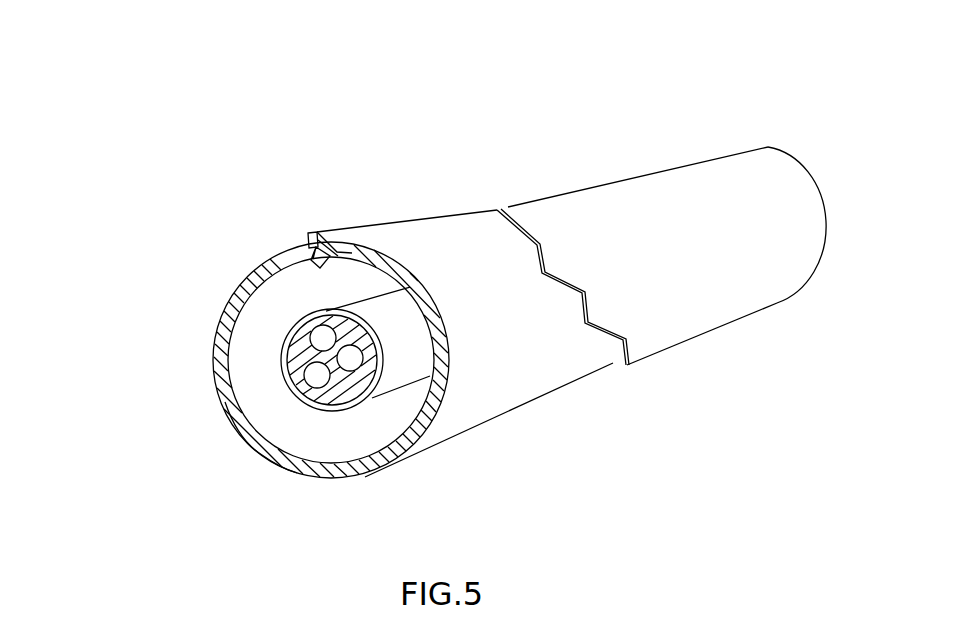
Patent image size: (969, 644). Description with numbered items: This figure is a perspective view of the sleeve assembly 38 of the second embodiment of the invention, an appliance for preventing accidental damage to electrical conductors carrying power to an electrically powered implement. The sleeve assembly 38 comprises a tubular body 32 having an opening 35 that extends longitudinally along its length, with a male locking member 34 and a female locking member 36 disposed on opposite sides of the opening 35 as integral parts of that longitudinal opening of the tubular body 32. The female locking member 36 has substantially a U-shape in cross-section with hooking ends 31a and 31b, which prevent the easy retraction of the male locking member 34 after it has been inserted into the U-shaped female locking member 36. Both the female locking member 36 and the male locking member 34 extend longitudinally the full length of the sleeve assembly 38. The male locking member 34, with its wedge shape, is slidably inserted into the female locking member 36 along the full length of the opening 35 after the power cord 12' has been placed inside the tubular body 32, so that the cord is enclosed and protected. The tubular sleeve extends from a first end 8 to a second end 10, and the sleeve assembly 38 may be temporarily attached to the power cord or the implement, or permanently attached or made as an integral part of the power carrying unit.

The first end 8 is at (757, 315).
The second end 10 is at (327, 463).
The power cord 12' is at (261, 400).
The hooking end 31a is at (307, 238).
The hooking end 31b is at (315, 265).
The tubular body 32 is at (528, 393).
The male locking member 34 is at (315, 232).
The opening 35 is at (470, 210).
The female locking member 36 is at (333, 233).
The sleeve assembly 38 is at (607, 165).